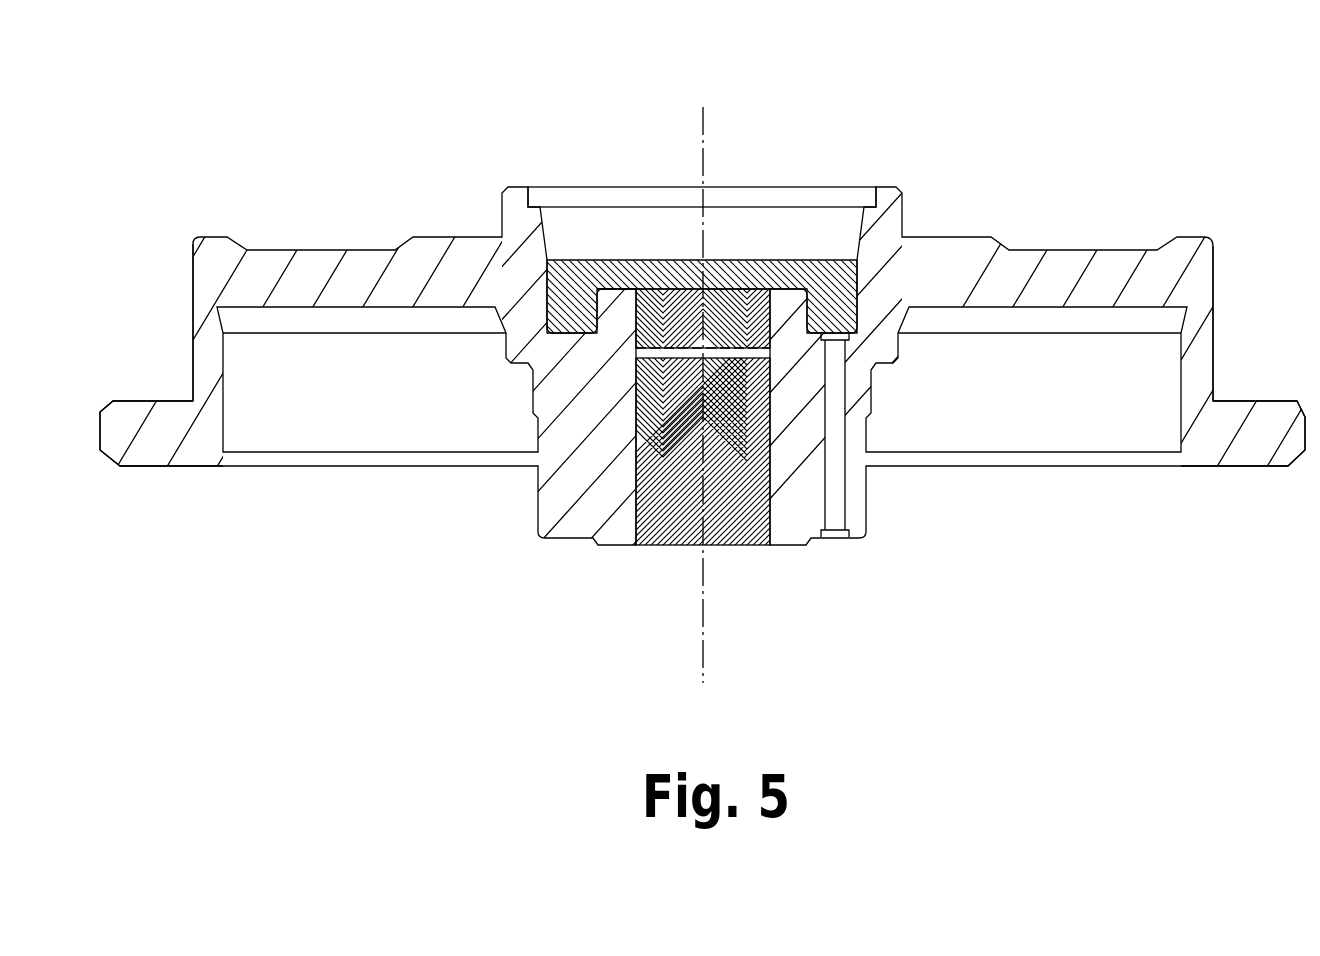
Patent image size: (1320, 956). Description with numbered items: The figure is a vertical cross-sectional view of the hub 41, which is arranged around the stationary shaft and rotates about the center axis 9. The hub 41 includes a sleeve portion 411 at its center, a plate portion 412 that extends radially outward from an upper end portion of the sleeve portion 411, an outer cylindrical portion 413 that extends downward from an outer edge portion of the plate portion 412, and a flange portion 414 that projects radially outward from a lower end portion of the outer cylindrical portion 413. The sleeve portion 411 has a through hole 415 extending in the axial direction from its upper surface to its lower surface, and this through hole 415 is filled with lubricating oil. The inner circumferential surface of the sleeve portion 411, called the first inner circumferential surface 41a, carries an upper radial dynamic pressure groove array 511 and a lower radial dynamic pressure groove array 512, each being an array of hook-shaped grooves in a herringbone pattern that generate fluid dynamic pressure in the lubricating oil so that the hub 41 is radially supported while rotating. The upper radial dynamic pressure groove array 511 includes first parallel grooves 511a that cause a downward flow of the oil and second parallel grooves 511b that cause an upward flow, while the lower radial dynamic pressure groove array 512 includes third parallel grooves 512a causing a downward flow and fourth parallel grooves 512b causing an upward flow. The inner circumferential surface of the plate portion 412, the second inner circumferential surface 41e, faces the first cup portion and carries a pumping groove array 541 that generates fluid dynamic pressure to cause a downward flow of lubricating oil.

The center axis 9 is at (700, 134).
The hub 41 is at (337, 95).
The first inner circumferential surface 41a is at (669, 350).
The second inner circumferential surface 41e is at (623, 270).
The sleeve portion 411 is at (555, 500).
The plate portion 412 is at (370, 262).
The outer cylindrical portion 413 is at (203, 353).
The flange portion 414 is at (143, 446).
The through hole 415 is at (834, 501).
The upper radial dynamic pressure groove array 511 is at (751, 235).
The first parallel grooves 511a is at (730, 303).
The second parallel grooves 511b is at (745, 330).
The lower radial dynamic pressure groove array 512 is at (746, 496).
The third parallel grooves 512a is at (728, 547).
The fourth parallel grooves 512b is at (713, 618).
The pumping groove array 541 is at (571, 282).